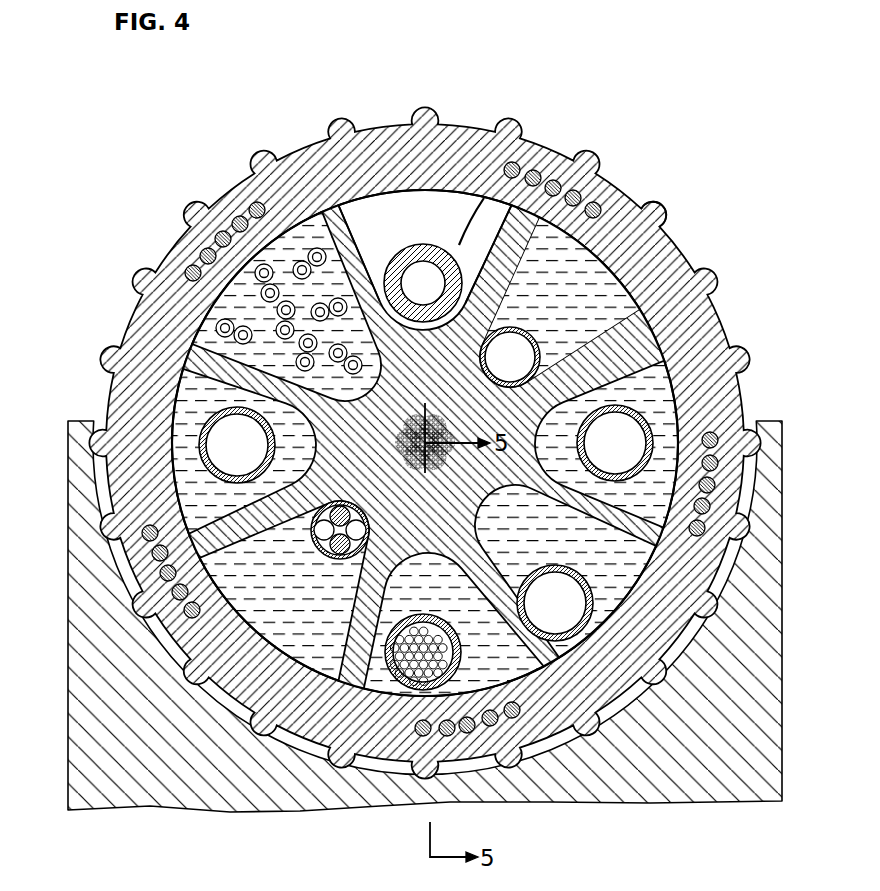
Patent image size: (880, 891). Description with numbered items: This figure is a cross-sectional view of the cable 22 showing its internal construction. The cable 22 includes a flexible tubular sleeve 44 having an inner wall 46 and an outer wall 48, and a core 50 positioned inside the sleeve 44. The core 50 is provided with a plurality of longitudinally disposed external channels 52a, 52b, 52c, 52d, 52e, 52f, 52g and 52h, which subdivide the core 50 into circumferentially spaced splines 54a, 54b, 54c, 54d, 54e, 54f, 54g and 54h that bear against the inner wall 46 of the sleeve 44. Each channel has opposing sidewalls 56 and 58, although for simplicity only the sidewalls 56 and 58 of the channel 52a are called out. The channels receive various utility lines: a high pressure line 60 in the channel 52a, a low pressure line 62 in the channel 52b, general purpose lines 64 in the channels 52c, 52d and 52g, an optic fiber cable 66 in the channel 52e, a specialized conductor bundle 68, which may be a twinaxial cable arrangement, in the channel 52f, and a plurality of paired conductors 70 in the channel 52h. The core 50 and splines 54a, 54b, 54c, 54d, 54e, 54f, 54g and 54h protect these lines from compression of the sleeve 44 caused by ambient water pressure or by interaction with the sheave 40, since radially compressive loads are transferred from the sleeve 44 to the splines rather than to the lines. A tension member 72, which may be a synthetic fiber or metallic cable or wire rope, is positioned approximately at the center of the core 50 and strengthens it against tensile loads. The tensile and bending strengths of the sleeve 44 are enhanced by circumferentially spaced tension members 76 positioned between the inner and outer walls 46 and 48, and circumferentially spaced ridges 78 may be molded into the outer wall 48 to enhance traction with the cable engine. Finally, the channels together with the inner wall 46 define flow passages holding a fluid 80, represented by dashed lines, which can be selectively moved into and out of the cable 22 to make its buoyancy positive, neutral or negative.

The cable 22 is at (428, 433).
The sheave 40 is at (70, 810).
The flexible tubular sleeve 44 is at (233, 187).
The inner wall 46 is at (468, 203).
The outer wall 48 is at (398, 203).
The core 50 is at (295, 222).
The channel 52a is at (397, 165).
The channel 52b is at (633, 237).
The channel 52c is at (655, 405).
The channel 52d is at (612, 606).
The channel 52e is at (363, 673).
The channel 52f is at (300, 616).
The channel 52g is at (182, 468).
The channel 52h is at (208, 306).
The spline 54a is at (374, 176).
The spline 54b is at (633, 237).
The spline 54c is at (648, 357).
The spline 54d is at (585, 579).
The spline 54e is at (489, 739).
The spline 54f is at (195, 684).
The spline 54g is at (200, 532).
The spline 54h is at (215, 322).
The sidewall 56 is at (355, 213).
The sidewall 58 is at (472, 203).
The high pressure line 60 is at (430, 247).
The low pressure line 62 is at (535, 340).
The general purpose line 64 is at (660, 440).
The optic fiber cable 66 is at (448, 682).
The specialized conductor bundle 68 is at (330, 560).
The paired conductors 70 is at (255, 270).
The tension member 72 is at (415, 440).
The tension members 76 is at (228, 230).
The ridges 78 is at (663, 207).
The fluid 80 is at (570, 287).